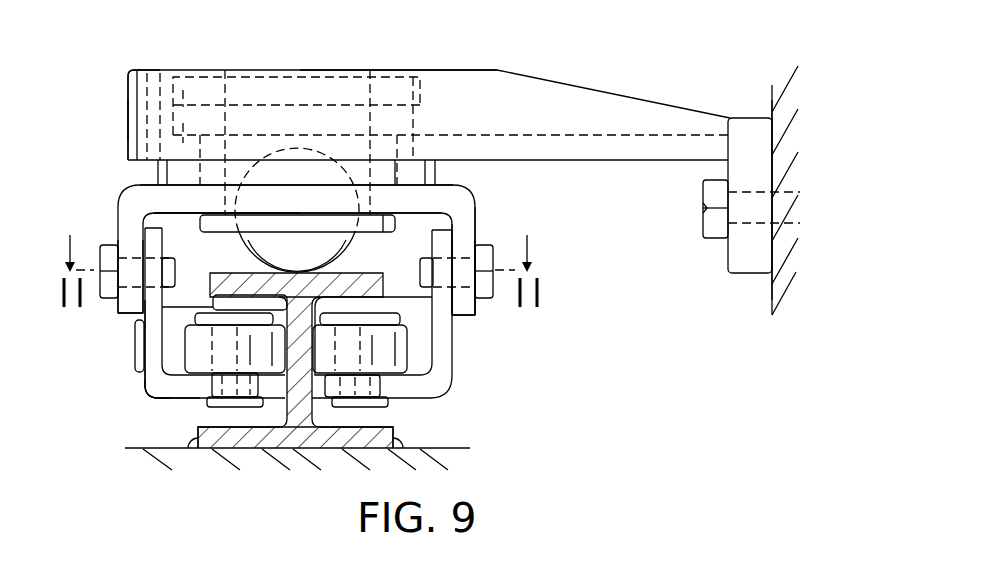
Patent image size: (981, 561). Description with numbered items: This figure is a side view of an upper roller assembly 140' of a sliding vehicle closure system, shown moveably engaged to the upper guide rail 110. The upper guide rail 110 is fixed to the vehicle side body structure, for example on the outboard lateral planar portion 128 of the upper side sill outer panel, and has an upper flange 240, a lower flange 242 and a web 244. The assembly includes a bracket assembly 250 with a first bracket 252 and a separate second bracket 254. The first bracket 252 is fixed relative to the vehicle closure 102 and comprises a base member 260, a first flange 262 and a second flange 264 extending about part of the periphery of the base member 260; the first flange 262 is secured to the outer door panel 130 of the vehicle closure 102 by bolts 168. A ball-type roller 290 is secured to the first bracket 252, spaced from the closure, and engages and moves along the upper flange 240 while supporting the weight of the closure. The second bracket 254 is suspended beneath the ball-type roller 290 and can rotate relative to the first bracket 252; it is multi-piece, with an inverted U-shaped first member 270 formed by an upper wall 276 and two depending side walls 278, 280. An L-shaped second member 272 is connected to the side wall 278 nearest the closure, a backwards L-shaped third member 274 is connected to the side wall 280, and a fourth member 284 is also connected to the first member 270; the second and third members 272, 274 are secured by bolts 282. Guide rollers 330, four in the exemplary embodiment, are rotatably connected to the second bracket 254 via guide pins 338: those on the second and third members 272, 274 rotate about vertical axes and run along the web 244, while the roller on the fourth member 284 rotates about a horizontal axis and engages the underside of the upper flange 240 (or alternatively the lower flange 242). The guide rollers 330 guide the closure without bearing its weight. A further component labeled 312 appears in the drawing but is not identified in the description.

The vehicle closure 102 is at (772, 82).
The upper guide rail 110 is at (193, 455).
The outboard lateral planar portion 128 is at (434, 450).
The outer door panel 130 is at (770, 110).
The upper roller assembly 140' is at (94, 70).
The bolts 168 is at (717, 230).
The upper flange 240 is at (377, 283).
The lower flange 242 is at (253, 440).
The web 244 is at (298, 405).
The bracket assembly 250 is at (587, 66).
The first bracket 252 is at (484, 62).
The second bracket 254 is at (490, 316).
The base member 260 is at (703, 230).
The first flange 262 is at (750, 258).
The second flange 264 is at (140, 77).
The first member 270 is at (110, 204).
The second member 272 is at (452, 367).
The third member 274 is at (152, 365).
The upper wall 276 is at (410, 198).
The side wall 278 is at (462, 232).
The side wall 280 is at (128, 300).
The bolts 282 is at (112, 250).
The fourth member 284 is at (150, 400).
The ball-type roller 290 is at (208, 240).
The bearing plate 312 is at (323, 253).
The guide rollers 330 is at (197, 345).
The guide pins 338 is at (237, 400).